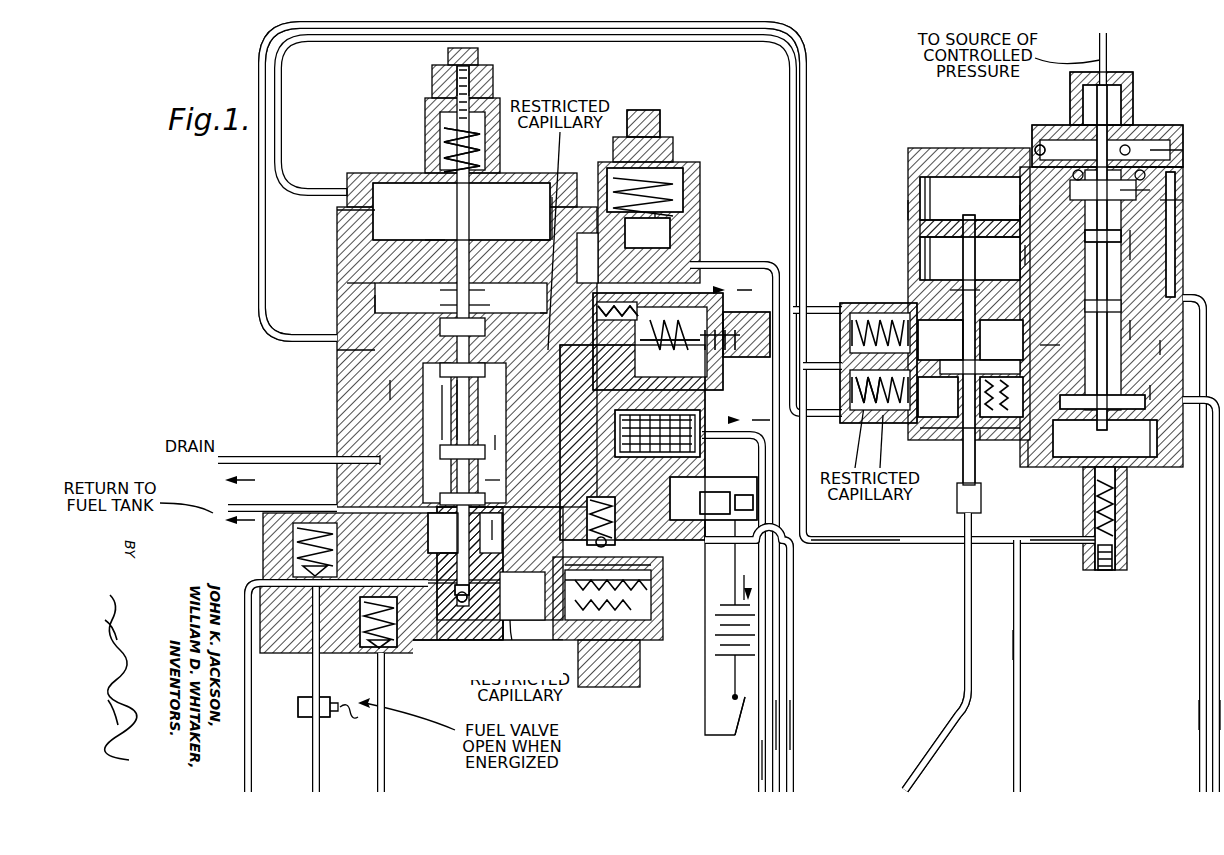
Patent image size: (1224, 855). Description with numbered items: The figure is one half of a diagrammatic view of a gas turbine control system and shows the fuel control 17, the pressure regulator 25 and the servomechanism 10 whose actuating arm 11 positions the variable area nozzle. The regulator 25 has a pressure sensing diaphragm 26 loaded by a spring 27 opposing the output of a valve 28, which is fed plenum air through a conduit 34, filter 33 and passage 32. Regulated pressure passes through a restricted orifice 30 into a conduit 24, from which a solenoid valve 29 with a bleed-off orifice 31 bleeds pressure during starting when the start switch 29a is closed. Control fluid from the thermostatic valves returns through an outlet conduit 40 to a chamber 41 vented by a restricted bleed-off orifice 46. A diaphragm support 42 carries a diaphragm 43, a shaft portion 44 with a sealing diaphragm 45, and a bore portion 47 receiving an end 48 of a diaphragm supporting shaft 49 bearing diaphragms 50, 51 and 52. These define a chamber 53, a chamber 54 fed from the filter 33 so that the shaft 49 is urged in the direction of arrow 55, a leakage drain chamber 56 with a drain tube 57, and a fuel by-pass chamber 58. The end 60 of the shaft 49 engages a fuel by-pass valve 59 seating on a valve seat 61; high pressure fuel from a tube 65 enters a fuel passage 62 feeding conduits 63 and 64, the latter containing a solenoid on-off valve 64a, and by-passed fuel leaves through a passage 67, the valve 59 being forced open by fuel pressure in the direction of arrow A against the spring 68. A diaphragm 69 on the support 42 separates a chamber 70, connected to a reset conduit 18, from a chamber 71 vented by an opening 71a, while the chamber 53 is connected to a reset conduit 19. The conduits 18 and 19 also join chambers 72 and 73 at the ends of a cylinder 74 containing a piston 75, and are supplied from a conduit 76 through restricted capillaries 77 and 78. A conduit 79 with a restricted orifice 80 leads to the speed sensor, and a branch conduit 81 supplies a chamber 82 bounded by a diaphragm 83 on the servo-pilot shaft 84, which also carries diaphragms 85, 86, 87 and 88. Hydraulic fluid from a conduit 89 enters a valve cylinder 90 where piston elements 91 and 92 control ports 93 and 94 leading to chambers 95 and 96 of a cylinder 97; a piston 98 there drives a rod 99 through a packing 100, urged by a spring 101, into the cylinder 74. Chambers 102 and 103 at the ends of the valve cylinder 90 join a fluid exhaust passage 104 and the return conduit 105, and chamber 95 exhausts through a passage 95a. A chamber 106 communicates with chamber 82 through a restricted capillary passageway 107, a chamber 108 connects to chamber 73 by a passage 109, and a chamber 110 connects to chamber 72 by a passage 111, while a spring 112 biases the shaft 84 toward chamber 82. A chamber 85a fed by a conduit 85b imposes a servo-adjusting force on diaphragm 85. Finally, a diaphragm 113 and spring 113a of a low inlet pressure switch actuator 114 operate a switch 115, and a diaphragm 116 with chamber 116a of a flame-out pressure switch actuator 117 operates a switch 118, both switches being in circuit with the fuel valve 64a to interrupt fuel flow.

The servo mechanism 10 is at (974, 123).
The actuating arm 11 is at (929, 760).
The fuel control 17 is at (494, 637).
The reset conduit 18 is at (341, 192).
The reset conduit 19 is at (330, 335).
The conduit 24 is at (758, 765).
The pressure regulator 25 is at (660, 565).
The pressure sensing diaphragm 26 is at (660, 585).
The spring 27 is at (640, 605).
The valve 28 is at (615, 520).
The solenoid valve 29 is at (715, 492).
The switch 29a is at (732, 705).
The restricted orifice 30 is at (720, 520).
The bleed-off orifice 31 is at (745, 495).
The passage 32 is at (590, 470).
The filter 33 is at (700, 420).
The conduit 34 is at (780, 740).
The outlet conduit 40 is at (794, 725).
The chamber 41 is at (360, 283).
The diaphragm support 42 is at (482, 305).
The diaphragm 43 is at (545, 313).
The shaft portion 44 is at (445, 293).
The sealing diaphragm 45 is at (430, 245).
The restricted bleed-off orifice 46 is at (705, 262).
The bore portion 47 is at (445, 305).
The end 48 is at (480, 290).
The diaphragm supporting shaft 49 is at (468, 400).
The diaphragm 50 is at (368, 303).
The diaphragm 51 is at (500, 445).
The diaphragm 52 is at (500, 478).
The chamber 53 is at (337, 355).
The chamber 54 is at (400, 390).
The arrow 55 is at (440, 413).
The leakage drain chamber 56 is at (380, 465).
The drain tube 57 is at (267, 460).
The fuel by-pass chamber 58 is at (430, 530).
The fuel by-pass valve 59 is at (470, 583).
The end 60 is at (467, 598).
The valve seat 61 is at (440, 553).
The fuel passage 62 is at (400, 600).
The conduit 63 is at (379, 750).
The conduit 64 is at (314, 750).
The solenoid controlled on-off valve 64a is at (310, 697).
The tube 65 is at (252, 768).
The passage 67 is at (245, 500).
The spring 68 is at (490, 150).
The diaphragm 69 is at (555, 200).
The chamber 70 is at (395, 193).
The chamber 71 is at (540, 243).
The opening 71a is at (345, 212).
The chamber 72 is at (940, 340).
The chamber 73 is at (950, 428).
The cylinder 74 is at (955, 320).
The piston 75 is at (952, 385).
The conduit 76 is at (716, 540).
The restricted capillary 77 is at (872, 330).
The restricted capillary 78 is at (915, 400).
The control pressure supply conduit 79 is at (1020, 560).
The restricted orifice 80 is at (822, 541).
The branch conduit 81 is at (1037, 538).
The chamber 82 is at (1150, 455).
The diaphragm 83 is at (1130, 455).
The servo-pilot shaft 84 is at (1108, 360).
The diaphragm 85 is at (1075, 125).
The chamber 85a is at (1125, 110).
The conduit 85b is at (1108, 38).
The diaphragm 86 is at (1040, 143).
The diaphragm 87 is at (1160, 190).
The diaphragm 88 is at (1136, 410).
The conduit 89 is at (1200, 545).
The valve cylinder 90 is at (1175, 275).
The piston element 91 is at (1130, 240).
The piston element 92 is at (1140, 325).
The port 93 is at (1050, 350).
The port 94 is at (1025, 255).
The chamber 95 is at (930, 193).
The passage 95a is at (1022, 213).
The chamber 96 is at (918, 250).
The cylinder 97 is at (912, 210).
The piston 98 is at (920, 226).
The rod 99 is at (965, 267).
The packing 100 is at (960, 290).
The spring 101 is at (990, 428).
The chamber 102 is at (1150, 230).
The chamber 103 is at (1150, 390).
The fluid exhaust passage 104 is at (1160, 345).
The hydraulic fluid return conduit 105 is at (1213, 580).
The chamber 106 is at (1180, 150).
The restricted capillary passageway 107 is at (1178, 206).
The chamber 108 is at (1178, 168).
The passage 109 is at (1020, 190).
The chamber 110 is at (1035, 465).
The passage 111 is at (1020, 330).
The spring 112 is at (1095, 500).
The diaphragm 113 is at (690, 300).
The spring 113a is at (670, 357).
The low inlet pressure switch actuator 114 is at (745, 355).
The switch 115 is at (640, 345).
The diaphragm 116 is at (700, 195).
The chamber 116a is at (690, 222).
The flame-out pressure switch actuator 117 is at (692, 160).
The switch 118 is at (700, 236).
The arrow A is at (484, 523).